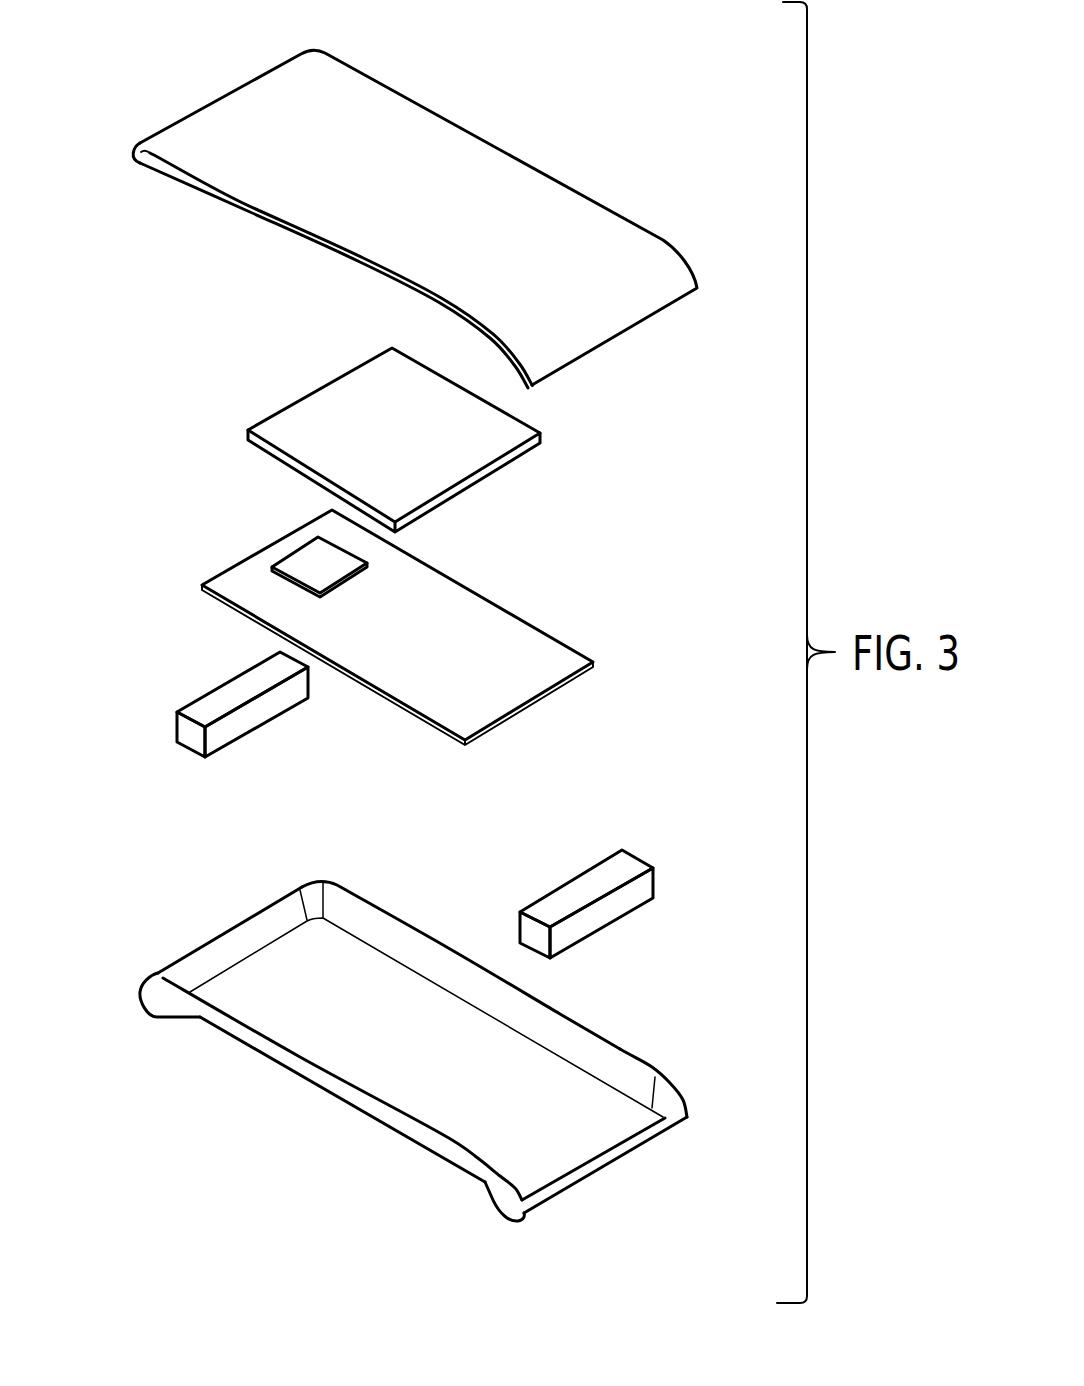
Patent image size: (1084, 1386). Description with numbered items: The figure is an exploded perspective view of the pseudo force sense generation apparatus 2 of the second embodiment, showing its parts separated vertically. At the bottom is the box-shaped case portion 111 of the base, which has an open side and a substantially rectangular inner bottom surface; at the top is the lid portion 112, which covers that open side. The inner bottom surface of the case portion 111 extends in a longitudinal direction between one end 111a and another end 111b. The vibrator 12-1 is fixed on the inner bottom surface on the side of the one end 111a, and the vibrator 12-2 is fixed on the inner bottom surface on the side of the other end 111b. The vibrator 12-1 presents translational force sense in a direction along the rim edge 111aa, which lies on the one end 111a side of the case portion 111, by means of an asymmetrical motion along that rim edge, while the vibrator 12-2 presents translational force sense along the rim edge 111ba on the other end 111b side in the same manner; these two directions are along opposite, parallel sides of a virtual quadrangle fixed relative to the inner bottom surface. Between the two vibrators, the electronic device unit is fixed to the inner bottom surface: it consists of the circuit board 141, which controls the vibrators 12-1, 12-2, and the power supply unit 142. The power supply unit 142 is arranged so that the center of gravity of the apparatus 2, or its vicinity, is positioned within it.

The pseudo force sense generation apparatus 2 is at (647, 94).
The lid portion 112 is at (392, 122).
The power supply unit 142 is at (312, 428).
The circuit board 141 is at (528, 655).
The vibrator 12-1 is at (195, 733).
The vibrator 12-2 is at (622, 865).
The case portion 111 is at (168, 1005).
The one end 111a is at (257, 965).
The rim edge 111aa is at (198, 947).
The another end 111b is at (590, 1147).
The rim edge 111ba is at (610, 1158).